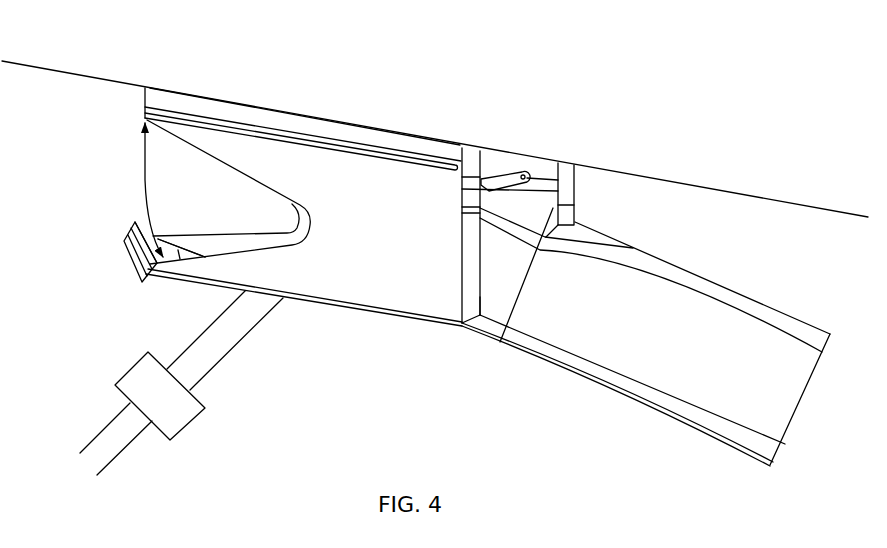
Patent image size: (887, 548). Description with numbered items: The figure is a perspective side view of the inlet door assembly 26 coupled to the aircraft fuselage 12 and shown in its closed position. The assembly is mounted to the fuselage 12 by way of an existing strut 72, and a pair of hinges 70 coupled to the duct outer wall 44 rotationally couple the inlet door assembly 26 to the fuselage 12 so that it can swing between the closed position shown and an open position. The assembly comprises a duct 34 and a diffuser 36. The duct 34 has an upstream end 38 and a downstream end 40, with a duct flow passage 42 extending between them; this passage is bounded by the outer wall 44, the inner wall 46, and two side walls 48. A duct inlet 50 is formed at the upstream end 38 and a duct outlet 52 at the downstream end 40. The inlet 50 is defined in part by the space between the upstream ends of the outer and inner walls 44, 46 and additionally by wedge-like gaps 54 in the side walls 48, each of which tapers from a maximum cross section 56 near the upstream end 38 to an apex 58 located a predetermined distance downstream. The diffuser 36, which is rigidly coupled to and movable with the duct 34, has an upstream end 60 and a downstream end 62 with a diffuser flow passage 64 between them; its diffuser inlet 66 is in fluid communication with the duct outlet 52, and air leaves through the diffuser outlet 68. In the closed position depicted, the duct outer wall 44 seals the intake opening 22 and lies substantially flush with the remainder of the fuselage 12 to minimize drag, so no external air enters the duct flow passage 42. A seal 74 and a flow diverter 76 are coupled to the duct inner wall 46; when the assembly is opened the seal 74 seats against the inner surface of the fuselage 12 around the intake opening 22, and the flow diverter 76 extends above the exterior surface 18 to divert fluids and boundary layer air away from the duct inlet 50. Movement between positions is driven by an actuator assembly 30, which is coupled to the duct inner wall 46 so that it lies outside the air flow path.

The aircraft fuselage 12 is at (735, 182).
The exterior surface 18 is at (67, 73).
The intake opening 22 is at (227, 100).
The inlet door assembly 26 is at (706, 122).
The actuator assembly 30 is at (143, 409).
The duct 34 is at (398, 305).
The diffuser 36 is at (665, 384).
The duct upstream end 38 is at (145, 88).
The duct downstream end 40 is at (470, 153).
The duct flow passage 42 is at (433, 237).
The duct outer wall 44 is at (295, 130).
The duct inner wall 46 is at (338, 306).
The side walls 48 is at (271, 182).
The duct inlet 50 is at (132, 182).
The duct outlet 52 is at (480, 273).
The gaps 54 is at (228, 218).
The maximum cross section 56 is at (155, 200).
The apex 58 is at (312, 226).
The diffuser upstream end 60 is at (468, 198).
The diffuser downstream end 62 is at (820, 348).
The diffuser flow passage 64 is at (740, 372).
The diffuser inlet 66 is at (480, 297).
The diffuser outlet 68 is at (803, 405).
The hinges 70 is at (523, 172).
The strut 72 is at (567, 163).
The seal 74 is at (124, 258).
The flow diverter 76 is at (133, 223).